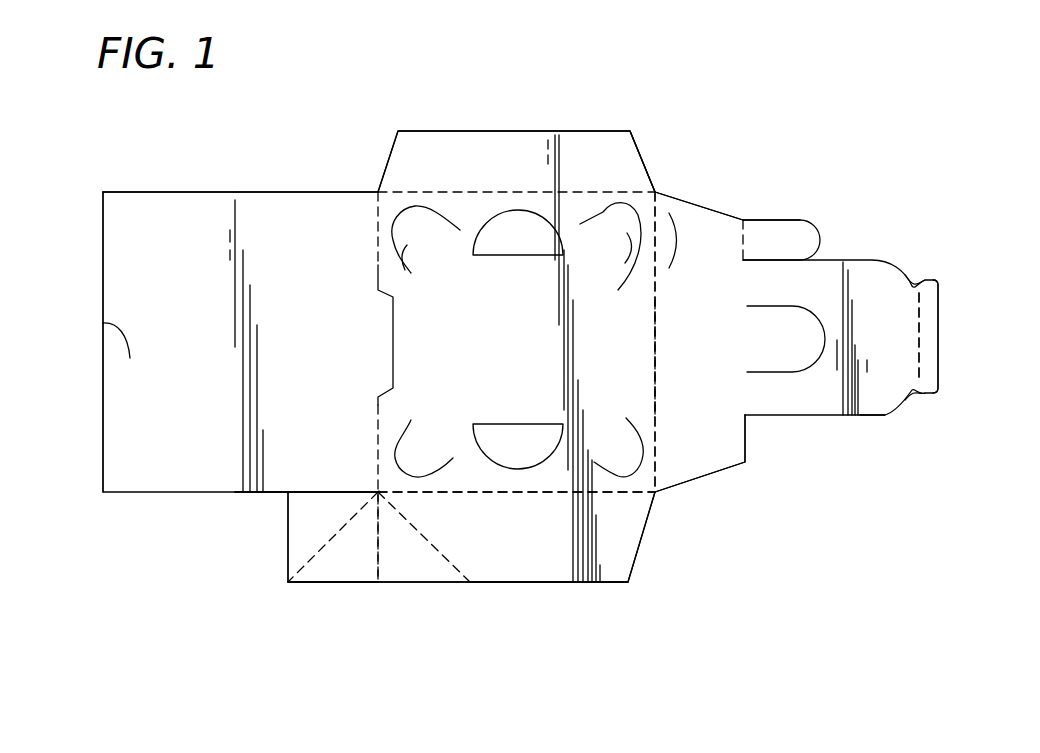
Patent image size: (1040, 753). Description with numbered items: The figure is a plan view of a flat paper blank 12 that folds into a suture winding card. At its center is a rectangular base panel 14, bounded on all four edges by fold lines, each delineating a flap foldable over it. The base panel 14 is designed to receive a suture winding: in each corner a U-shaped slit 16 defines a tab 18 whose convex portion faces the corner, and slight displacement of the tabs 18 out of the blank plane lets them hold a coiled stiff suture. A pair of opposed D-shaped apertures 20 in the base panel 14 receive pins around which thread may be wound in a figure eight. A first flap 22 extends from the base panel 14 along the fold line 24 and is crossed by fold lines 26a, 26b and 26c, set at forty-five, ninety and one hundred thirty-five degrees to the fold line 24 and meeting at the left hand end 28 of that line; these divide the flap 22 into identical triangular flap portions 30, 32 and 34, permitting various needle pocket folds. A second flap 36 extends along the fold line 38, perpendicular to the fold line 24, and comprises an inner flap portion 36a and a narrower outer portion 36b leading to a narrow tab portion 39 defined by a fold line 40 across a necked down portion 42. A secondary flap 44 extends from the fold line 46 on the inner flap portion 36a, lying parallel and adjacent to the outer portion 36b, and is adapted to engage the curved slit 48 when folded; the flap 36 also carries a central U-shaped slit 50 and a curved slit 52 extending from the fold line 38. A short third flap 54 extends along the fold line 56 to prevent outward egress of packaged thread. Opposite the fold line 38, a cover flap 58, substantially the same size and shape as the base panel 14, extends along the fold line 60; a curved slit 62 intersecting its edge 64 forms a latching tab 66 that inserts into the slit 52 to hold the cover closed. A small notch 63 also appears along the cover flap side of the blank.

The blank 12 is at (703, 203).
The base panel 14 is at (618, 317).
The U-shaped slits 16 is at (407, 257).
The tabs 18 is at (428, 218).
The D-shaped apertures 20 is at (526, 255).
The first flap 22 is at (637, 540).
The fold line 24 is at (509, 492).
The fold line 26a is at (432, 540).
The fold line 26b is at (375, 545).
The fold line 26c is at (315, 556).
The left hand end of fold line 28 is at (385, 494).
The triangular flap portion 30 is at (447, 577).
The triangular flap portion 32 is at (318, 573).
The triangular flap portion 34 is at (303, 508).
The second flap 36 is at (905, 250).
The inner flap portion 36a is at (732, 458).
The outer flap portion 36b is at (890, 403).
The fold line 38 is at (656, 398).
The tab portion 39 is at (938, 331).
The fold line 40 is at (919, 315).
The necked down portion 42 is at (915, 283).
The secondary flap 44 is at (807, 232).
The fold line 46 is at (752, 232).
The curved slit 48 is at (678, 257).
The central U-shaped slit 50 is at (807, 318).
The curved slit 52 is at (683, 343).
The third flap 54 is at (522, 140).
The fold line 56 is at (588, 189).
The cover flap 58 is at (298, 170).
The fold line 60 is at (376, 262).
The curved slit 62 is at (128, 337).
The notch 63 is at (393, 318).
The edge 64 is at (104, 258).
The latching tab 66 is at (103, 334).